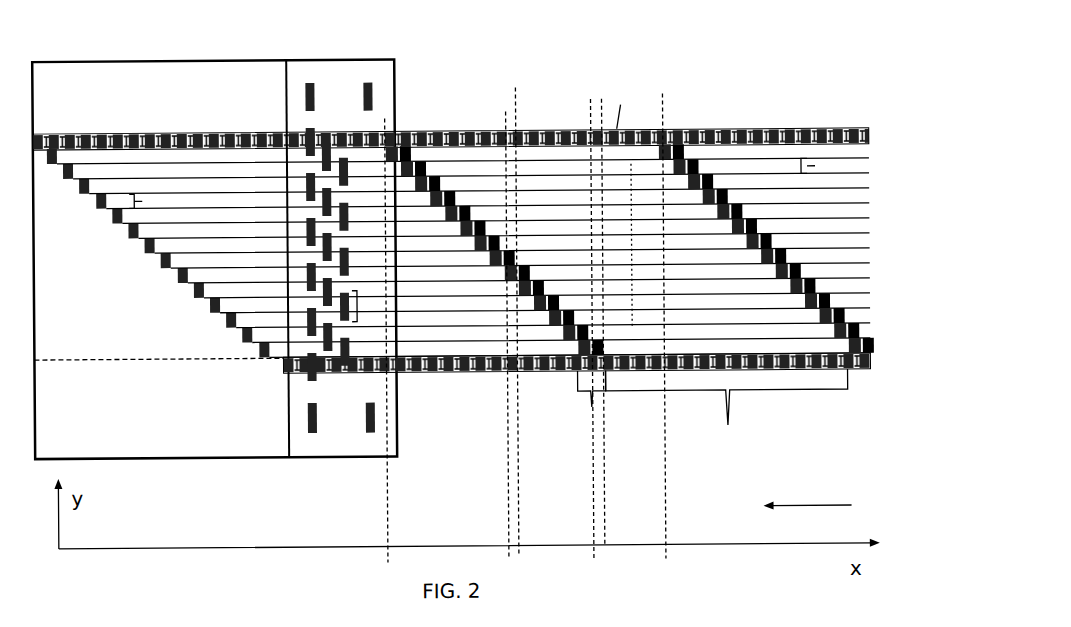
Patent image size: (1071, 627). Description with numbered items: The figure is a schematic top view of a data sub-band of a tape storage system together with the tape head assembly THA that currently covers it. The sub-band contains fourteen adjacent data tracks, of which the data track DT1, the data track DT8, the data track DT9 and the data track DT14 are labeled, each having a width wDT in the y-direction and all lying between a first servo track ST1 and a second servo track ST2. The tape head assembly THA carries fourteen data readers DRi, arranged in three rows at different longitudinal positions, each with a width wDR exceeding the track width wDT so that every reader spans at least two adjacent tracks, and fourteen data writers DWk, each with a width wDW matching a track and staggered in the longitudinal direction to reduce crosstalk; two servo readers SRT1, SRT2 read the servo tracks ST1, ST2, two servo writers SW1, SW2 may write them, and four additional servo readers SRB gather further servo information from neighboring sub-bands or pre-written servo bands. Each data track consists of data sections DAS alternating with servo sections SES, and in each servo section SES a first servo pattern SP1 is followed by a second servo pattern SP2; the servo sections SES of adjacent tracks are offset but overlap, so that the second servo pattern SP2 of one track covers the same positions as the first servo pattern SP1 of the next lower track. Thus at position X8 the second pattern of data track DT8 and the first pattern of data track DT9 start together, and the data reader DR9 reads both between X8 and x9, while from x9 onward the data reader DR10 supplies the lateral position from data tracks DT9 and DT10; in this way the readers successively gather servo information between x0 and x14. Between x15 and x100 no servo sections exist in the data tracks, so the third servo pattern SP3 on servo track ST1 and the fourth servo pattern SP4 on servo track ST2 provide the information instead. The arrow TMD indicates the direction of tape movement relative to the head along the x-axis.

The tape head assembly THA is at (397, 93).
The first servo track ST1 is at (212, 132).
The second servo track ST2 is at (505, 375).
The servo writer SW1 is at (39, 132).
The servo writer SW2 is at (285, 377).
The data writer DWk is at (240, 342).
The data reader DRi is at (463, 219).
The data reader DR9 is at (305, 280).
The data reader DR10 is at (318, 298).
The data writer width wDW is at (153, 202).
The data reader width wDR is at (369, 305).
The data track width wDT is at (825, 166).
The servo reader SRT1 is at (311, 129).
The servo reader SRT2 is at (312, 382).
The additional servo reader SRB is at (372, 82).
The servo section SES is at (518, 303).
The data track DT1 is at (628, 237).
The data track DT8 is at (524, 259).
The data track DT9 is at (536, 273).
The data track DT14 is at (613, 348).
The data section DAS is at (738, 268).
The first servo pattern SP1 is at (670, 157).
The second servo pattern SP2 is at (690, 160).
The third servo pattern SP3 is at (624, 104).
The fourth servo pattern SP4 is at (780, 371).
The transfer movement direction TMD is at (807, 494).
The longitudinal position x0 is at (391, 356).
The longitudinal position X8 is at (512, 352).
The longitudinal position x9 is at (532, 320).
The longitudinal position x14 is at (603, 346).
The longitudinal position x15 is at (621, 324).
The longitudinal position x100 is at (677, 343).